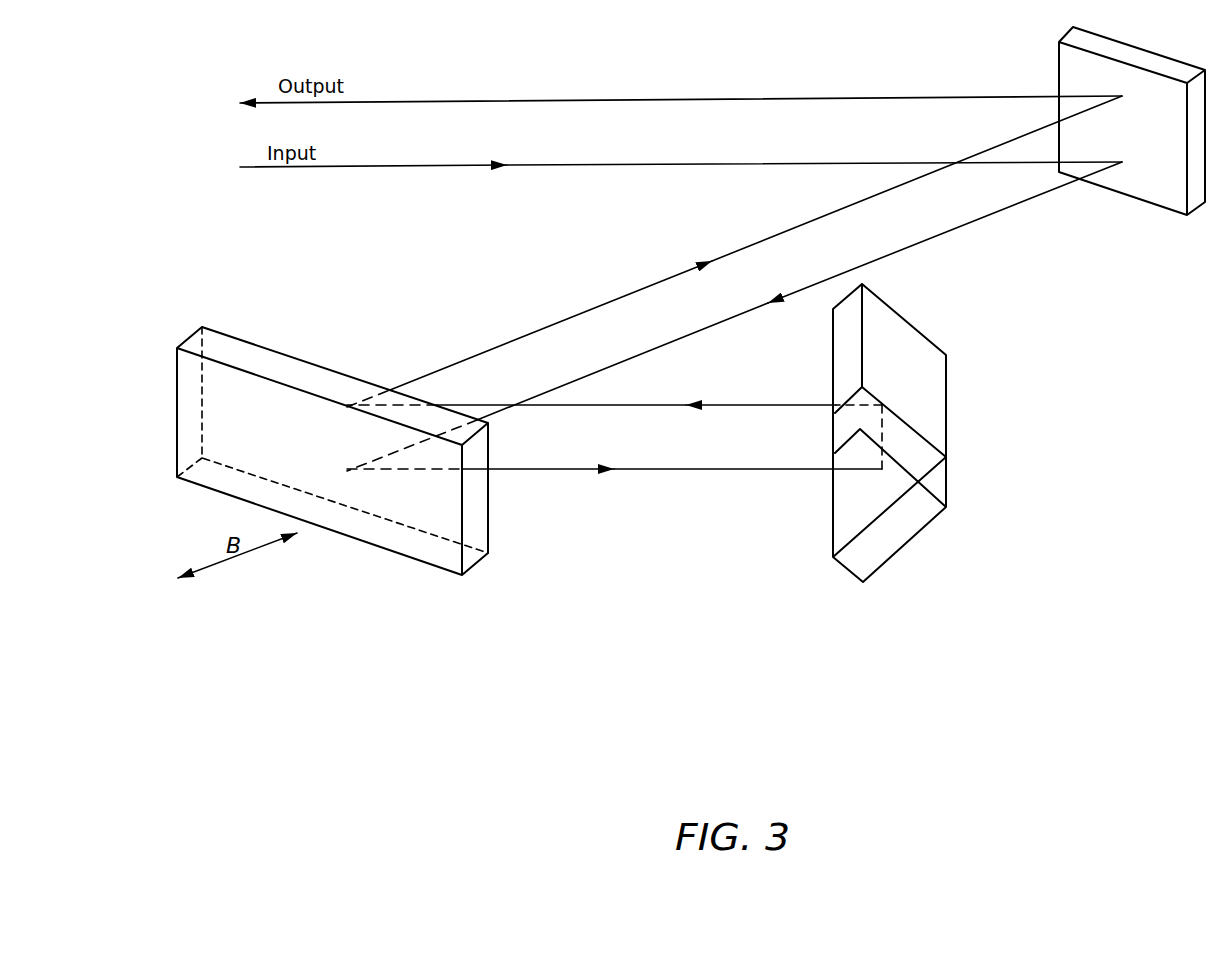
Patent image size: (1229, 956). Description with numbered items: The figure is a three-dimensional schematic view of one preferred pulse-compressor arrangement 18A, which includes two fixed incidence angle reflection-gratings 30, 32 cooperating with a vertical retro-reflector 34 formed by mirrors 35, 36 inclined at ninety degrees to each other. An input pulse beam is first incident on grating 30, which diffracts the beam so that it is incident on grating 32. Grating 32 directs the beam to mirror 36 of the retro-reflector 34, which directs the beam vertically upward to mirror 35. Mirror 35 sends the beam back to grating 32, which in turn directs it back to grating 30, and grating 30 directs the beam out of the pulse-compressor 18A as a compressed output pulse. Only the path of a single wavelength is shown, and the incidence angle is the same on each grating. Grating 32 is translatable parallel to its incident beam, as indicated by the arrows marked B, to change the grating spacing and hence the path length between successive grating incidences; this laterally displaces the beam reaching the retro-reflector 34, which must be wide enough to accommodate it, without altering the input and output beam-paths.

The pulse-compressor arrangement 18A is at (1000, 680).
The reflection-grating 30 is at (1155, 188).
The reflection-grating 32 is at (243, 433).
The vertical retro-reflector 34 is at (916, 433).
The mirror 35 is at (905, 382).
The mirror 36 is at (852, 508).